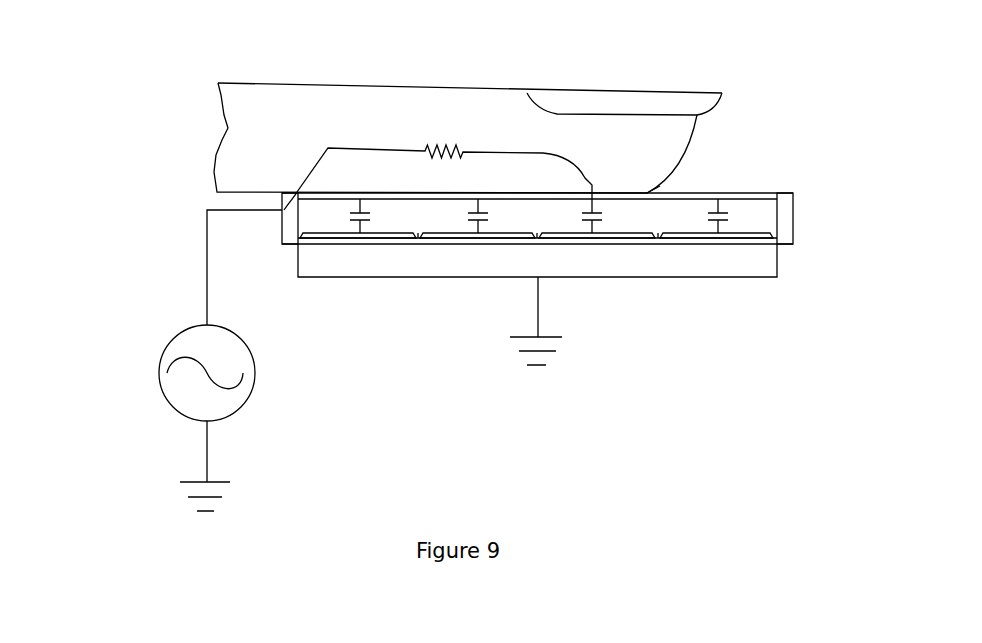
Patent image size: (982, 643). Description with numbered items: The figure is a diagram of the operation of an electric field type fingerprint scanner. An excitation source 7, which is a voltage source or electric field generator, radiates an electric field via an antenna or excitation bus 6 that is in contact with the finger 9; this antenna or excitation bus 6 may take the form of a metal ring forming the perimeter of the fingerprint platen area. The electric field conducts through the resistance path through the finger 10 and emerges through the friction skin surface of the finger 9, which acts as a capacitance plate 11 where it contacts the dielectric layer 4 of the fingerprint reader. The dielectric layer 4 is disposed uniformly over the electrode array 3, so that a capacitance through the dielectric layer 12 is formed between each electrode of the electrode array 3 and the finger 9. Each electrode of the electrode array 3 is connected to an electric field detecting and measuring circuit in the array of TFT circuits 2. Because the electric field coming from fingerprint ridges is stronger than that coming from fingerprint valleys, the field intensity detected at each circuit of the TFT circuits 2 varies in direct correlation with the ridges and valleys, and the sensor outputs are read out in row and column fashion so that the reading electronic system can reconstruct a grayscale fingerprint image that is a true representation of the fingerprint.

The TFT circuits 2 is at (598, 242).
The electrode array 3 is at (730, 233).
The dielectric layer 4 is at (748, 217).
The antenna or excitation bus 6 is at (297, 239).
The excitation source 7 is at (177, 330).
The finger 9 is at (411, 113).
The resistance path through the finger 10 is at (413, 148).
The capacitance plate 11 is at (653, 190).
The capacitance through the dielectric layer 12 is at (607, 217).